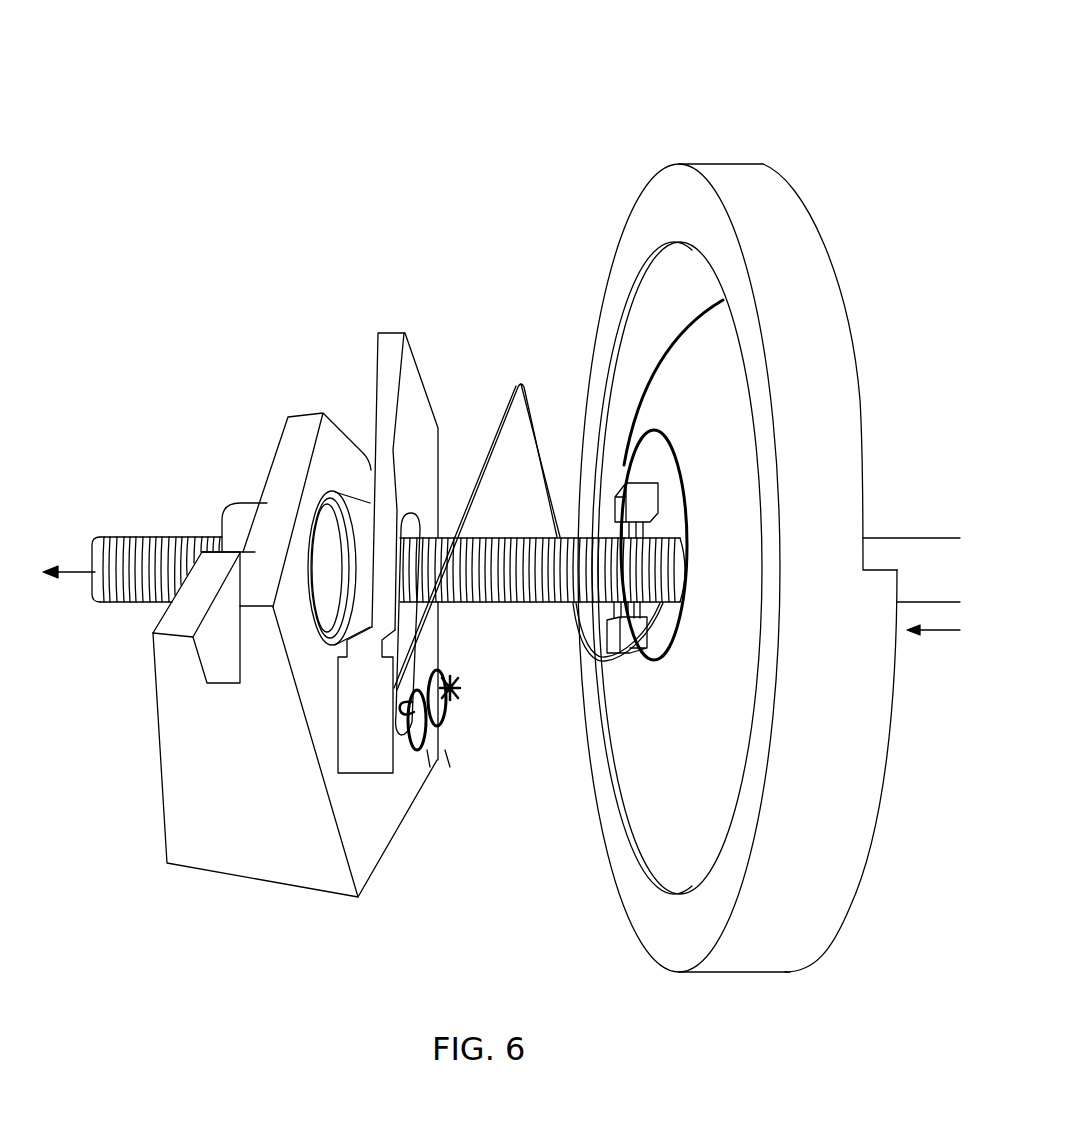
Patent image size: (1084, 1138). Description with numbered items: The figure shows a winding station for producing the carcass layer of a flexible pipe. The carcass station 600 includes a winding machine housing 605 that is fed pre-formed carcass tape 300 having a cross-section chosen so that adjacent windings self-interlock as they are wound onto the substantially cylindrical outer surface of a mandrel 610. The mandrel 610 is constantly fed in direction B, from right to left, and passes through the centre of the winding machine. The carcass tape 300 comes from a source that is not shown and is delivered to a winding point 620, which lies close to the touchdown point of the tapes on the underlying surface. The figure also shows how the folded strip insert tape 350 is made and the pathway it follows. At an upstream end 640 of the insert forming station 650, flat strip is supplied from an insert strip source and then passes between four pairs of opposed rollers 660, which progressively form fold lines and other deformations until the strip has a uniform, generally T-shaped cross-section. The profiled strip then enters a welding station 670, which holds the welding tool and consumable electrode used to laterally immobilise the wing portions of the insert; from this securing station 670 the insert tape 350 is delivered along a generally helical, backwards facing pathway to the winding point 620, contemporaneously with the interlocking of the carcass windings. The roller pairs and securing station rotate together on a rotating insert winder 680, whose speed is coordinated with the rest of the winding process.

The carcass station 600 is at (556, 113).
The winding machine housing 605 is at (773, 205).
The mandrel 610 is at (910, 565).
The winding point 620 is at (622, 680).
The carcass tape 300 is at (680, 322).
The insert tape 350 is at (680, 447).
The upstream end 640 is at (542, 698).
The insert forming station 650 is at (447, 763).
The opposed rollers 660 is at (480, 650).
The welding station 670 is at (400, 705).
The rotating insert winder 680 is at (405, 402).